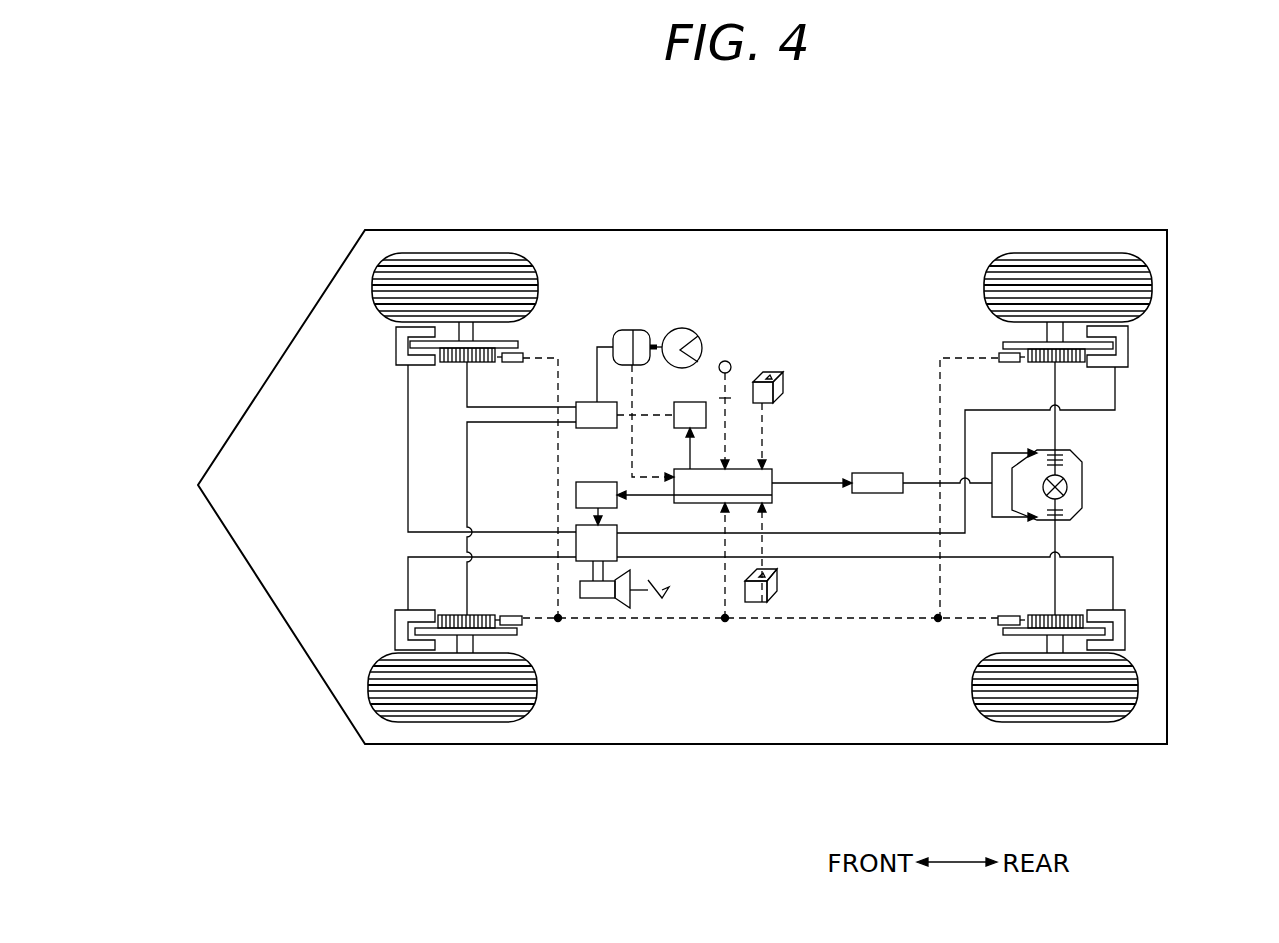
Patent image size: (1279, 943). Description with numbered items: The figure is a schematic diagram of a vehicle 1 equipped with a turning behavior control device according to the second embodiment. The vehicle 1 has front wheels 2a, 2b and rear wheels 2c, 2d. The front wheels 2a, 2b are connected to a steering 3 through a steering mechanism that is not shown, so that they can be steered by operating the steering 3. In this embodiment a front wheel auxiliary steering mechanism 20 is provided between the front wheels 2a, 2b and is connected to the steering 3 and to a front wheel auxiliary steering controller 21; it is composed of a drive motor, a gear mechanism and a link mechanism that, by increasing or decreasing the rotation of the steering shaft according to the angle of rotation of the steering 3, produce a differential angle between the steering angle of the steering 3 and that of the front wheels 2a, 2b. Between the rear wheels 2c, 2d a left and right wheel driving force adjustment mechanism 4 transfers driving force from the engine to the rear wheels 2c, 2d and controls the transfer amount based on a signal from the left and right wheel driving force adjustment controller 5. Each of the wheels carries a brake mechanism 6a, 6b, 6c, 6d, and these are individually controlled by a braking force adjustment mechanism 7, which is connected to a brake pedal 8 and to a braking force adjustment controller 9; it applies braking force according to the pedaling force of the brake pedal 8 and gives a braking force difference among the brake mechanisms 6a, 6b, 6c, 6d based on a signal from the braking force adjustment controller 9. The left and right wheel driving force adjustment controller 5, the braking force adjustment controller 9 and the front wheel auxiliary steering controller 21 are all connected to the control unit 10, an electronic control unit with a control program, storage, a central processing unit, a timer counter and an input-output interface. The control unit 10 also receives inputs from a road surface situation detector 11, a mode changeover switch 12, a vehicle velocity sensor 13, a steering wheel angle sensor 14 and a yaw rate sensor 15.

The vehicle 1 is at (230, 437).
The front wheel 2a is at (460, 254).
The front wheel 2b is at (457, 722).
The rear wheel 2c is at (1060, 253).
The rear wheel 2d is at (1067, 722).
The steering 3 is at (668, 328).
The left and right wheel driving force adjustment mechanism 4 is at (1082, 490).
The left and right wheel driving force adjustment controller 5 is at (870, 473).
The brake mechanism 6a is at (395, 345).
The brake mechanism 6b is at (395, 630).
The brake mechanism 6c is at (1128, 340).
The brake mechanism 6d is at (1125, 630).
The braking force adjustment mechanism 7 is at (576, 561).
The brake pedal 8 is at (667, 598).
The braking force adjustment controller 9 is at (597, 482).
The control unit 10 is at (780, 466).
The road surface situation detector 11 is at (768, 372).
The mode changeover switch 12 is at (726, 360).
The vehicle velocity sensor 13 is at (515, 362).
The steering wheel angle sensor 14 is at (628, 328).
The yaw rate sensor 15 is at (770, 602).
The front wheel auxiliary steering mechanism 20 is at (578, 402).
The front wheel auxiliary steering controller 21 is at (702, 402).